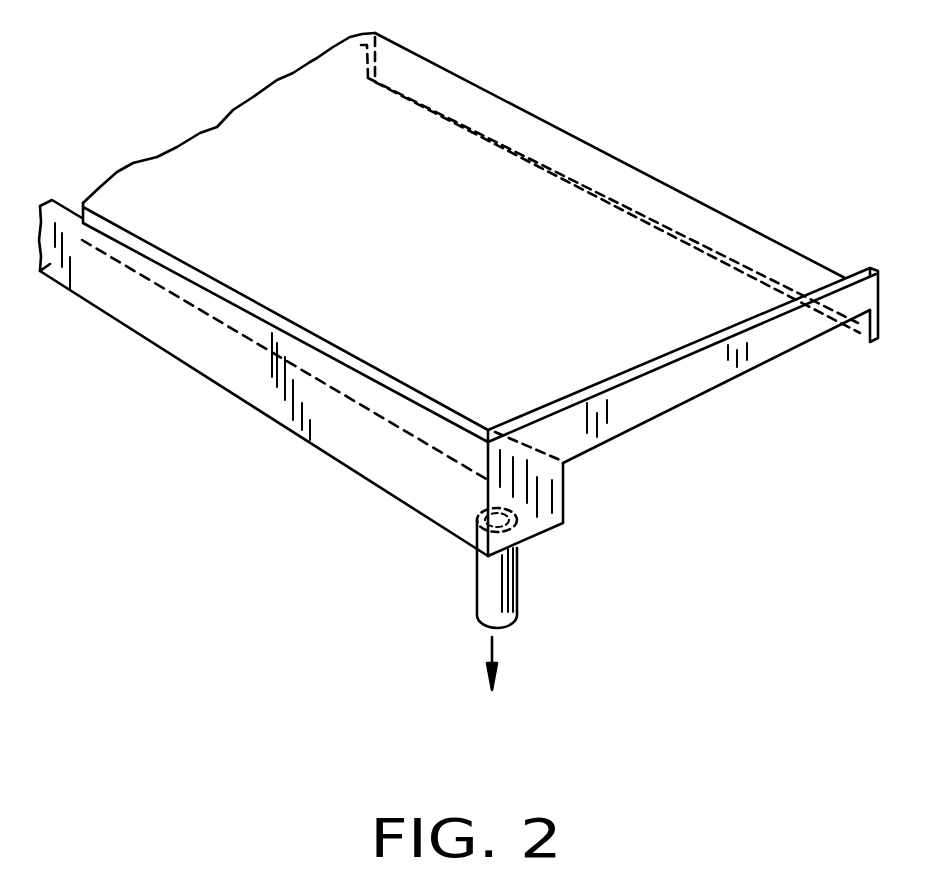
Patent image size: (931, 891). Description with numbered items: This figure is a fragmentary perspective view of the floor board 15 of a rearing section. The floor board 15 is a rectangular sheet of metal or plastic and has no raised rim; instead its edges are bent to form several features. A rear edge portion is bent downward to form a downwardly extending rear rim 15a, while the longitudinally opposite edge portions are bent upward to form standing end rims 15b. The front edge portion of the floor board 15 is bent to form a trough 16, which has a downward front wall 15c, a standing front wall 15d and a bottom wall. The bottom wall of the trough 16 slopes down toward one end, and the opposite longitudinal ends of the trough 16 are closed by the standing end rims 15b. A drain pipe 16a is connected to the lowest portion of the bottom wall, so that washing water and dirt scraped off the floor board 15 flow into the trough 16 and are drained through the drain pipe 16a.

The floor board 15 is at (183, 168).
The rear rim 15a is at (862, 323).
The standing end rim 15b is at (677, 373).
The downward front wall 15c is at (567, 485).
The standing front wall 15d is at (377, 453).
The trough 16 is at (247, 375).
The drain pipe 16a is at (485, 580).